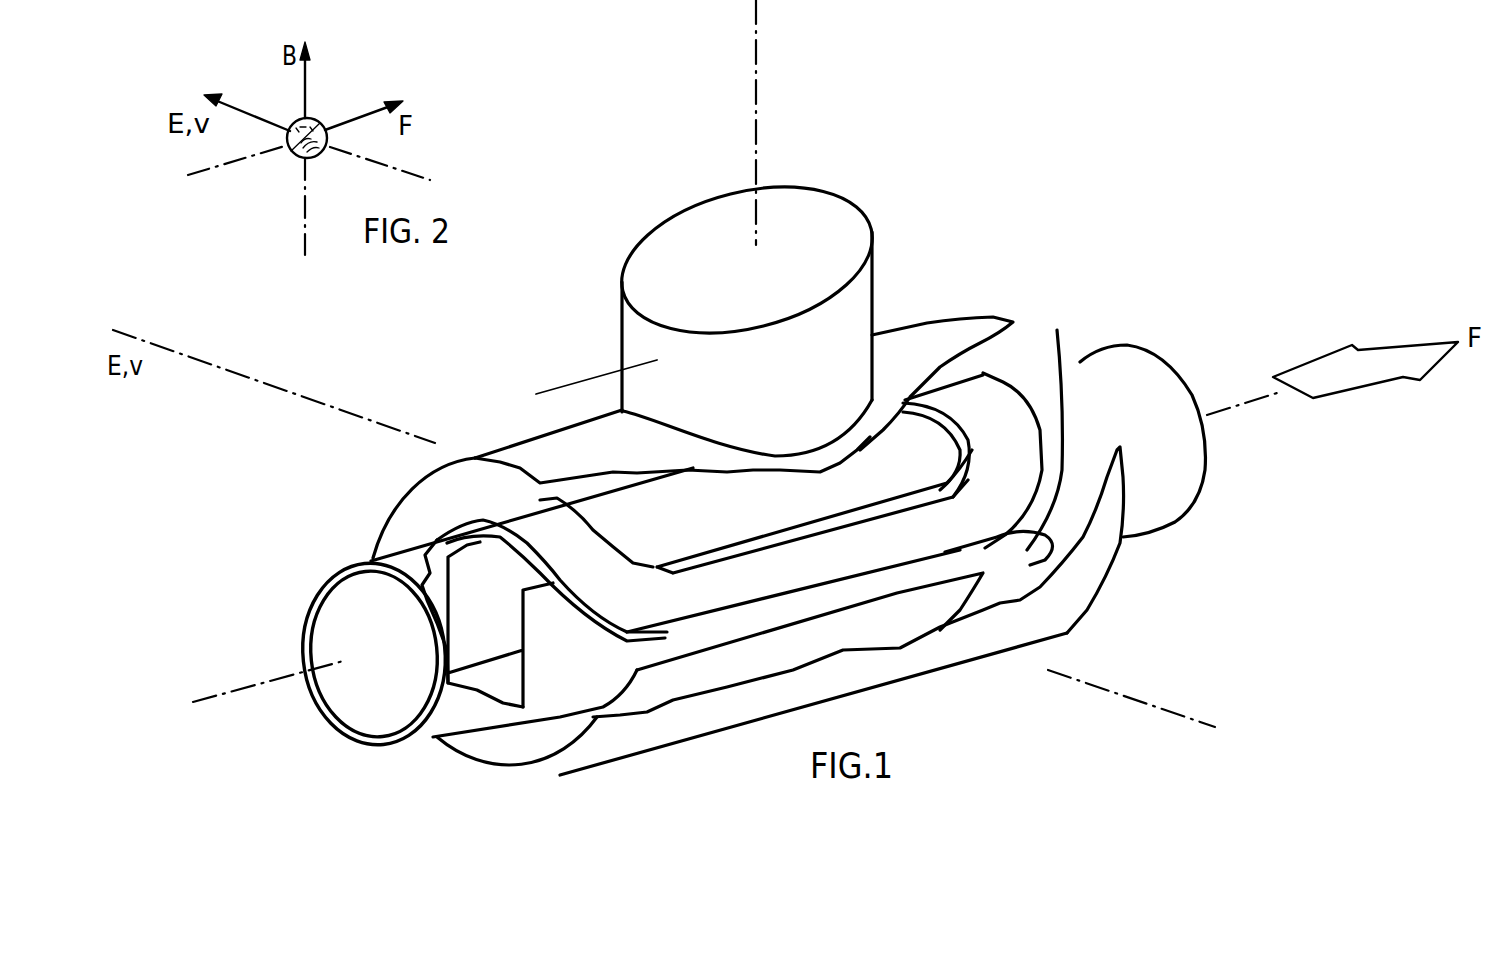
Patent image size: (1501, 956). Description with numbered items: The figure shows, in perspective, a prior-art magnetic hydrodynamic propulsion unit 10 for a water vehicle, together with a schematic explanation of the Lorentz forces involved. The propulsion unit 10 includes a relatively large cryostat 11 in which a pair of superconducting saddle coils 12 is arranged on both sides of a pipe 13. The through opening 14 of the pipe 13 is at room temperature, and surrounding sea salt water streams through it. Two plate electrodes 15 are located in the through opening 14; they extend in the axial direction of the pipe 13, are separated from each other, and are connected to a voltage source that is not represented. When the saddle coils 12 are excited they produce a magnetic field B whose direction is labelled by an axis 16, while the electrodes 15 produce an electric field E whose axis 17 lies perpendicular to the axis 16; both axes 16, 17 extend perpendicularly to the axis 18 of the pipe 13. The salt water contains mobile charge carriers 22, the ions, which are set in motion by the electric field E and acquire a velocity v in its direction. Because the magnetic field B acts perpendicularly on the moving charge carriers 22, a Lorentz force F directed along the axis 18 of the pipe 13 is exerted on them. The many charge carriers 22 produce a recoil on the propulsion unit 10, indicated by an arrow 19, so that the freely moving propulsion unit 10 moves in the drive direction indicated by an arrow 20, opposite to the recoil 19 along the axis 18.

In FIG. 1, the magnetic hydrodynamic propulsion unit 10 is at (1151, 195).
In FIG. 1, the cryostat 11 is at (508, 448).
In FIG. 1, the superconducting saddle coils 12 is at (1058, 345).
In FIG. 1, the pipe 13 is at (1158, 362).
In FIG. 1, the through opening 14 is at (357, 735).
In FIG. 1, the plate electrodes 15 is at (478, 655).
In FIG. 1, the axis of the magnetic field 16 is at (757, 30).
In FIG. 1, the axis of the electric field 17 is at (293, 394).
In FIG. 1, the axis of the pipe 18 is at (196, 702).
In FIG. 1, the recoil arrow 19 is at (1399, 367).
In FIG. 1, the drive direction arrow 20 is at (528, 398).
In FIG. 2, the charge carriers 22 is at (293, 157).